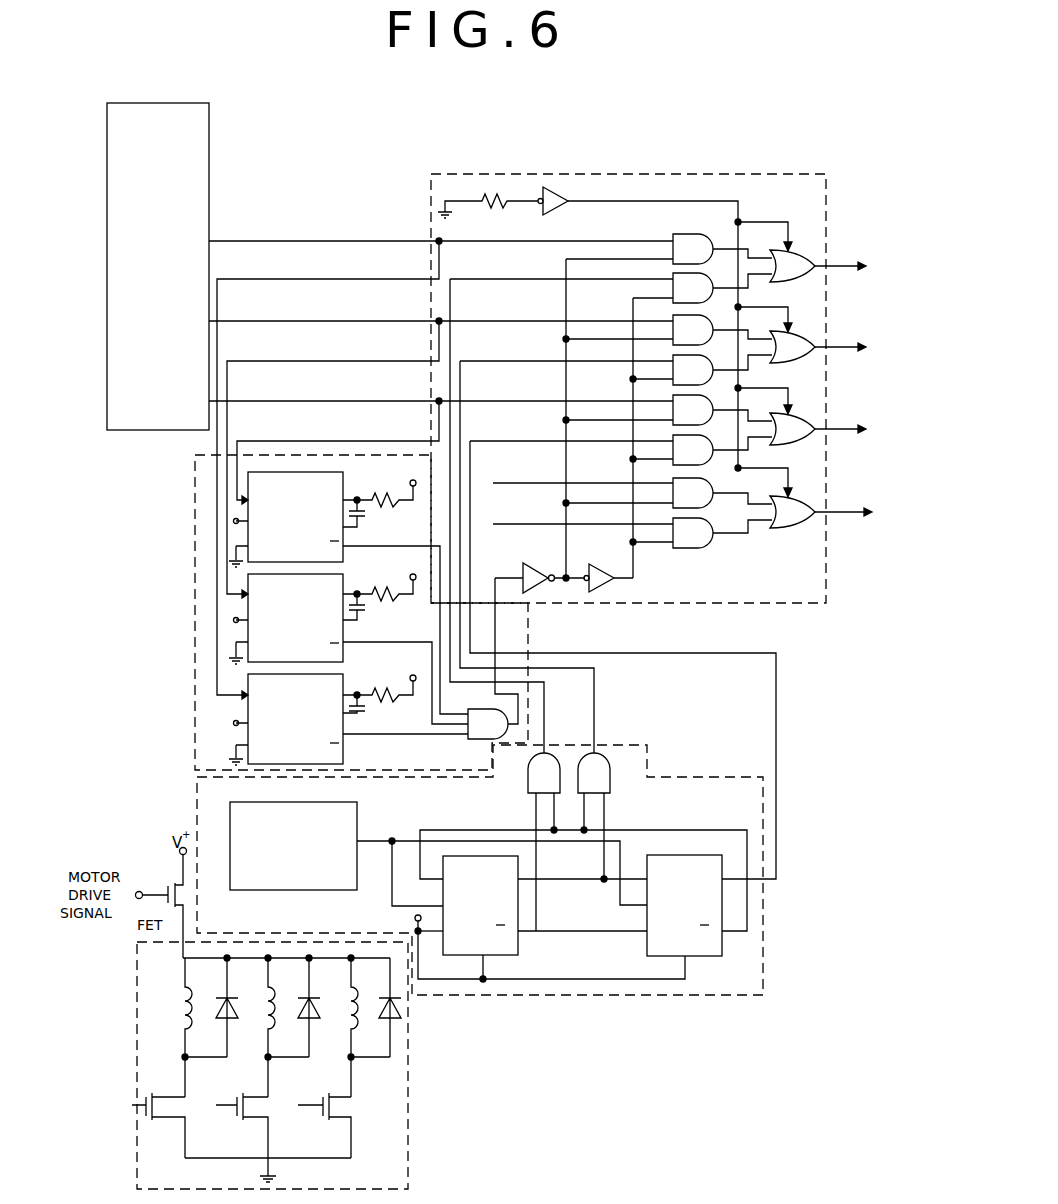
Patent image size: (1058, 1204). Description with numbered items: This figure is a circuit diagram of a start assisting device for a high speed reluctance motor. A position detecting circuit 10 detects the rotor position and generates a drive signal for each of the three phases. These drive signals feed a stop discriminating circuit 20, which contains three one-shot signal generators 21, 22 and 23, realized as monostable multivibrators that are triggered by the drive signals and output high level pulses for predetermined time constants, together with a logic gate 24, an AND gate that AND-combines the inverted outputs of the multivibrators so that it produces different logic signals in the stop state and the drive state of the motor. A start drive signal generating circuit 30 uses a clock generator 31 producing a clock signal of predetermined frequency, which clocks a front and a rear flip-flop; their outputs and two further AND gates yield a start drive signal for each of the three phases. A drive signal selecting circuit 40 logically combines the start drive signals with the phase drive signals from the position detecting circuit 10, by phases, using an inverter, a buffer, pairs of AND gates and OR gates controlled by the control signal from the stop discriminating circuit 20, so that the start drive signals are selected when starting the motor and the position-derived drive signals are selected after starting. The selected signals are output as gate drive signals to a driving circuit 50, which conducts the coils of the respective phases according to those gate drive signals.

The position detecting circuit 10 is at (210, 207).
The stop discriminating circuit 20 is at (195, 541).
The one-shot signal generator 21 is at (303, 472).
The one-shot signal generator 22 is at (248, 631).
The one-shot signal generator 23 is at (248, 737).
The logic gate 24 is at (483, 737).
The start drive signal generating circuit 30 is at (766, 978).
The clock generator 31 is at (322, 891).
The drive signal selecting circuit 40 is at (793, 173).
The driving circuit 50 is at (410, 1095).